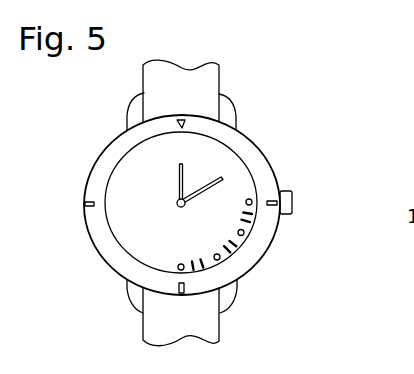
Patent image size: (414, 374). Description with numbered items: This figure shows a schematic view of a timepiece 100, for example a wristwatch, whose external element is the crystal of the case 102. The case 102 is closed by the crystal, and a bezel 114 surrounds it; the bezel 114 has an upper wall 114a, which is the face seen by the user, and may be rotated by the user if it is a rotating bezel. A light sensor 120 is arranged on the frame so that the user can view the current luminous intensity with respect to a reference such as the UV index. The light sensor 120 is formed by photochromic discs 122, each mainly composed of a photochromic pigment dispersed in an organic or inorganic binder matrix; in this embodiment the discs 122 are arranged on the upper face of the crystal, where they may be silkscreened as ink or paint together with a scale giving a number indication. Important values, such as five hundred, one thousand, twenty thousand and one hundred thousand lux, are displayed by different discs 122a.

The timepiece 100 is at (327, 92).
The case 102 is at (247, 135).
The bezel 114 is at (254, 157).
The upper wall 114a is at (180, 124).
The light sensor 120 is at (224, 262).
The photochromic disc 122 is at (240, 252).
The different disc 122a is at (252, 192).